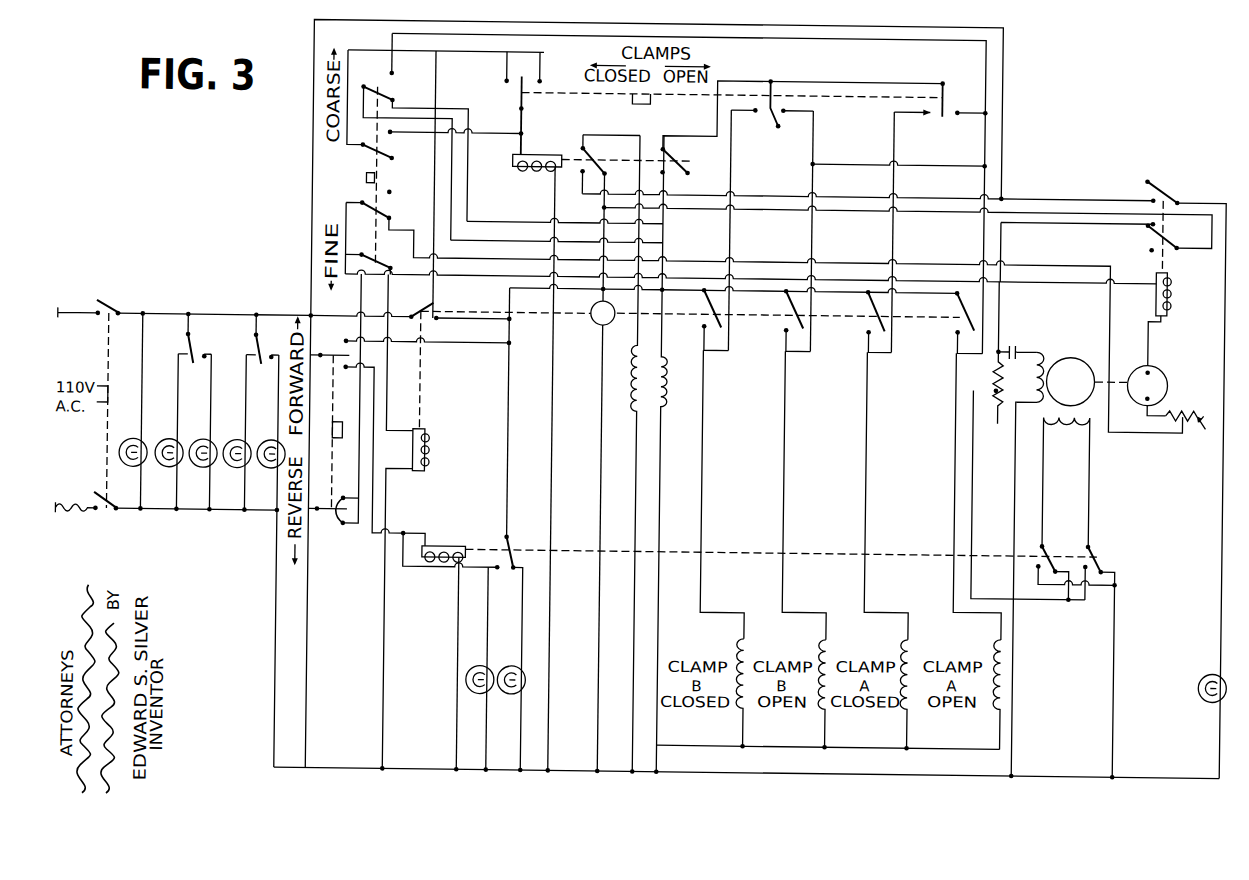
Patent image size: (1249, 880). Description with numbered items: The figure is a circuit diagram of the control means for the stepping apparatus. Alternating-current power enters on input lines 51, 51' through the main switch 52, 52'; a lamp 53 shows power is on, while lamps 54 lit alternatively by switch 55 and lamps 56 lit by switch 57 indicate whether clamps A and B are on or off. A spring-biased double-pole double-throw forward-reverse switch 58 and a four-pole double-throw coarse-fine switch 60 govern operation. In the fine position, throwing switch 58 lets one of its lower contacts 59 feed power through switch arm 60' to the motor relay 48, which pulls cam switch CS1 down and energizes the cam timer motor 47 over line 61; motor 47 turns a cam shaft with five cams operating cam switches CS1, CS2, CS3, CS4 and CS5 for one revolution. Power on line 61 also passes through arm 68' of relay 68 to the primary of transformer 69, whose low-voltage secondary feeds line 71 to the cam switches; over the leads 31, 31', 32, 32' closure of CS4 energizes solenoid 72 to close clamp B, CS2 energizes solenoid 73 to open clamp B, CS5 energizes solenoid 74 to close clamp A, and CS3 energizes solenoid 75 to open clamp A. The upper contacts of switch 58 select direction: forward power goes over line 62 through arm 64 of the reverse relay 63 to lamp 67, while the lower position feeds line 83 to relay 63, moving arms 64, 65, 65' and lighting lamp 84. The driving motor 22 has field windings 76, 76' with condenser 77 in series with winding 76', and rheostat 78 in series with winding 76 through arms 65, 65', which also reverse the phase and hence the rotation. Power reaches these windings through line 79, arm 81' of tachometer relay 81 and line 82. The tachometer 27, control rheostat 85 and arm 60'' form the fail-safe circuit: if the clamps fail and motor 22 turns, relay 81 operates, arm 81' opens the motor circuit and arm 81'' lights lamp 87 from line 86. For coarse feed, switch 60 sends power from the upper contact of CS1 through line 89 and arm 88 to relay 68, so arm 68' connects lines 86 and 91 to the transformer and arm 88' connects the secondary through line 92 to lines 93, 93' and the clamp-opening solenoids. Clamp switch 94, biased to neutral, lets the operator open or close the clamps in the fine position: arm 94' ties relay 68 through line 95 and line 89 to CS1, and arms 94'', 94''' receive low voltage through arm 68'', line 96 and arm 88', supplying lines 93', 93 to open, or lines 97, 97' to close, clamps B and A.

The driving motor 22 is at (1077, 352).
The tachometer 27 is at (1157, 362).
The clamp B closed lead 31 is at (724, 494).
The clamp B open lead 31' is at (806, 495).
The clamp A closed lead 32 is at (888, 496).
The clamp A open lead 32' is at (960, 496).
The cam timer motor 47 is at (598, 327).
The motor relay 48 is at (430, 454).
The input line 51 is at (79, 302).
The input line 51' is at (76, 492).
The switch 52 is at (204, 296).
The switch 52' is at (185, 623).
The lamp 53 is at (137, 444).
The lamps 54 is at (206, 444).
The switch 55 is at (193, 350).
The lamps 56 is at (274, 444).
The switch 57 is at (260, 352).
The forward-reverse switch 58 is at (334, 408).
The lower contacts 59 is at (343, 527).
The coarse-fine switch 60 is at (358, 175).
The switch arm 60' is at (382, 258).
The switch arm 60'' is at (764, 311).
The line 61 is at (510, 305).
The line 62 is at (458, 344).
The reverse relay 63 is at (442, 548).
The switch arm 64 is at (514, 550).
The relay arm 65 is at (1077, 560).
The relay arm 65' is at (1050, 585).
The indicator lamp 67 is at (512, 667).
The relay 68 is at (533, 452).
The switch arm 68' is at (626, 219).
The switch arm 68'' is at (801, 128).
The transformer 69 is at (632, 387).
The line 71 is at (745, 277).
The solenoid 72 is at (744, 640).
The solenoid 73 is at (826, 640).
The solenoid 74 is at (908, 640).
The solenoid 75 is at (1001, 639).
The field winding 76 is at (1066, 482).
The field winding 76' is at (1020, 565).
The condenser 77 is at (1026, 330).
The rheostat 78 is at (994, 372).
The line 79 is at (690, 209).
The tachometer relay 81 is at (1179, 259).
The switch arm 81' is at (1171, 238).
The switch arm 81'' is at (1182, 477).
The line 82 is at (1052, 218).
The line 83 is at (375, 510).
The indicating lamp 84 is at (475, 668).
The control rheostat 85 is at (1206, 404).
The line 86 is at (311, 180).
The indicating lamp 87 is at (1204, 676).
The switch arm 88 is at (434, 106).
The switch arm 88' is at (413, 160).
The line 89 is at (433, 170).
The line 91 is at (776, 193).
The line 92 is at (662, 242).
The line 93 is at (675, 189).
The line 93' is at (896, 232).
The clamp switch 94 is at (731, 109).
The switch arm 94' is at (502, 115).
The switch arm 94'' is at (792, 112).
The switch arm 94''' is at (962, 98).
The line 95 is at (461, 53).
The line 96 is at (516, 223).
The line 97 is at (746, 229).
The line 97' is at (910, 231).
The cam switch CS1 is at (434, 305).
The cam switch CS2 is at (777, 319).
The cam switch CS3 is at (944, 321).
The cam switch CS4 is at (697, 319).
The cam switch CS5 is at (857, 320).